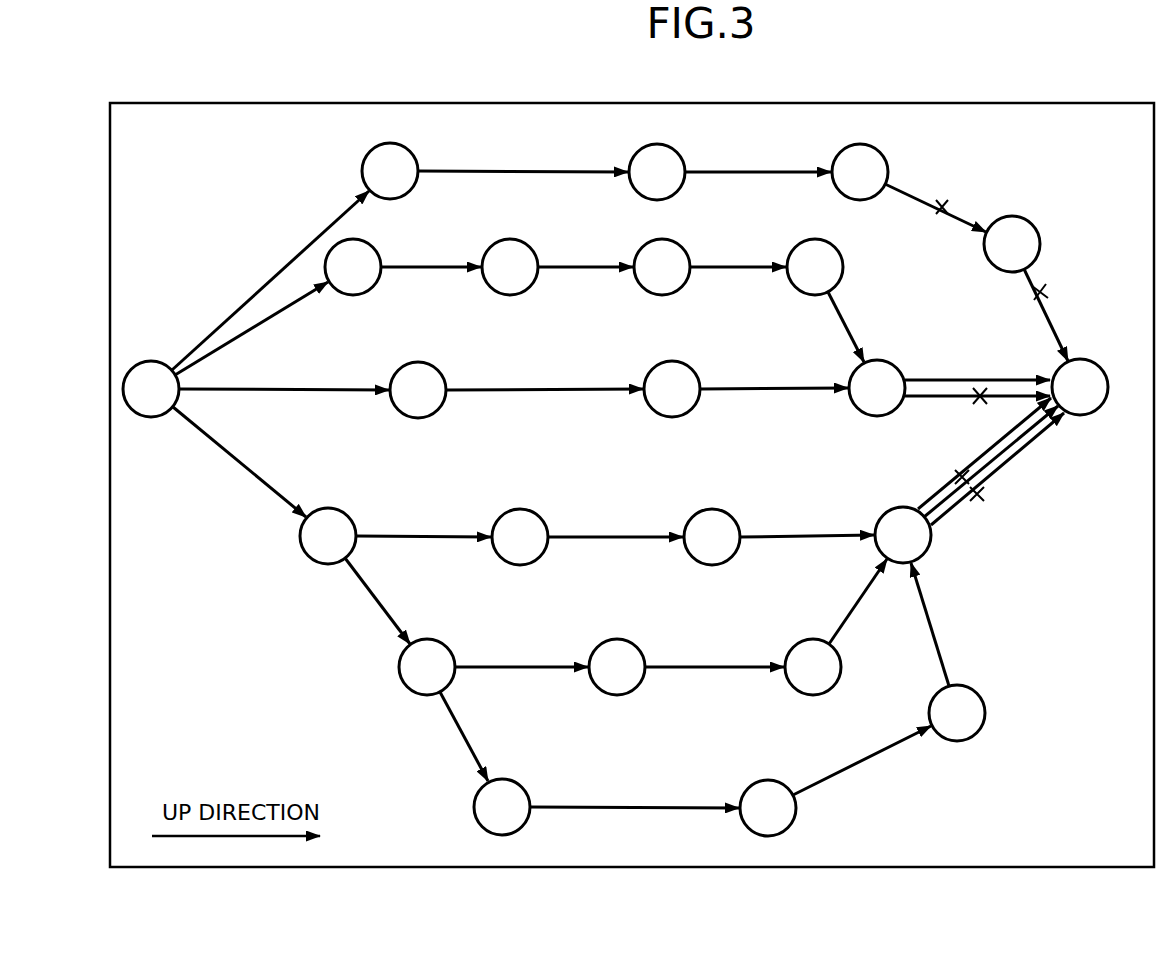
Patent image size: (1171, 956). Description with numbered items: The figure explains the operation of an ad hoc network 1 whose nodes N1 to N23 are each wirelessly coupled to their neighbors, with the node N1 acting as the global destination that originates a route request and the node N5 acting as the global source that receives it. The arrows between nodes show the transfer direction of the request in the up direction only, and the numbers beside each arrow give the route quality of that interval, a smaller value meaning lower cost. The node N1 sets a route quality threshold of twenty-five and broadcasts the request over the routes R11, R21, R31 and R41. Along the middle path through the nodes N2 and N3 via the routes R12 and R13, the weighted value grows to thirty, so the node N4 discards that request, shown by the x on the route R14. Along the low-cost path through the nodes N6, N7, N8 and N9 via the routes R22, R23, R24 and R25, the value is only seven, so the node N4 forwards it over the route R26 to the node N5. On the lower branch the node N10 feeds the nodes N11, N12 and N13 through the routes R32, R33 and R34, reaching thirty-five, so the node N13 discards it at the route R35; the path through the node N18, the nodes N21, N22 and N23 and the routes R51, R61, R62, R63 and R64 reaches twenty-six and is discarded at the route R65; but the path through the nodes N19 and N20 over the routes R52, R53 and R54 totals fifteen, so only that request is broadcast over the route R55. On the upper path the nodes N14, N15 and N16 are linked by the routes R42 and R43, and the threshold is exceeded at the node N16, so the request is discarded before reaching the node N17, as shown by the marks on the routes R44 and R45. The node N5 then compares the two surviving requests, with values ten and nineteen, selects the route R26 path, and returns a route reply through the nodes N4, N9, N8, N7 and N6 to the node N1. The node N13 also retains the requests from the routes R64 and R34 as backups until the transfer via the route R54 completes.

The ad hoc network 1 is at (1034, 103).
The node N1 is at (154, 361).
The node N2 is at (433, 364).
The node N3 is at (682, 363).
The node N4 is at (890, 360).
The node N5 is at (1088, 363).
The node N6 is at (365, 297).
The node N7 is at (535, 245).
The node N8 is at (688, 245).
The node N9 is at (846, 262).
The node N10 is at (328, 508).
The node N11 is at (520, 508).
The node N12 is at (710, 508).
The node N13 is at (882, 512).
The node N14 is at (418, 186).
The node N15 is at (678, 188).
The node N16 is at (866, 198).
The node N17 is at (1040, 244).
The node N18 is at (430, 640).
The node N19 is at (623, 640).
The node N20 is at (836, 682).
The node N21 is at (522, 780).
The node N22 is at (770, 781).
The node N23 is at (987, 712).
The route R11 is at (271, 387).
The route R12 is at (492, 387).
The route R13 is at (742, 387).
The route R14 is at (918, 400).
The route R21 is at (279, 305).
The route R22 is at (423, 268).
The route R23 is at (569, 268).
The route R24 is at (725, 268).
The route R25 is at (846, 322).
The route R26 is at (964, 380).
The route R31 is at (236, 462).
The route R32 is at (418, 535).
The route R33 is at (610, 535).
The route R34 is at (784, 535).
The route R35 is at (928, 502).
The route R41 is at (246, 288).
The route R42 is at (536, 170).
The route R43 is at (762, 170).
The route R44 is at (913, 196).
The route R45 is at (1054, 316).
The route R51 is at (369, 608).
The route R52 is at (523, 665).
The route R53 is at (732, 665).
The route R54 is at (862, 624).
The route R55 is at (1002, 462).
The route R61 is at (454, 720).
The route R62 is at (676, 806).
The route R63 is at (878, 764).
The route R64 is at (946, 640).
The route R65 is at (960, 511).